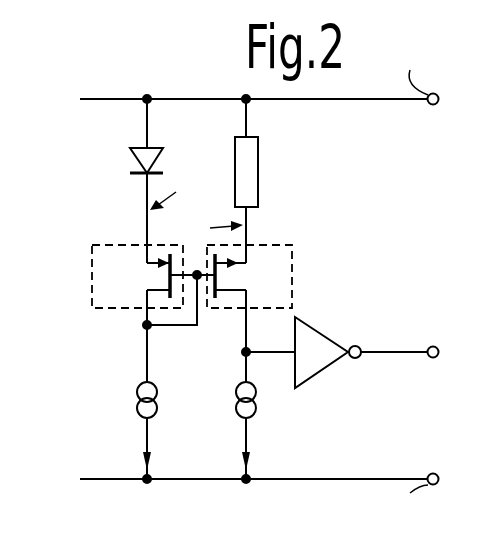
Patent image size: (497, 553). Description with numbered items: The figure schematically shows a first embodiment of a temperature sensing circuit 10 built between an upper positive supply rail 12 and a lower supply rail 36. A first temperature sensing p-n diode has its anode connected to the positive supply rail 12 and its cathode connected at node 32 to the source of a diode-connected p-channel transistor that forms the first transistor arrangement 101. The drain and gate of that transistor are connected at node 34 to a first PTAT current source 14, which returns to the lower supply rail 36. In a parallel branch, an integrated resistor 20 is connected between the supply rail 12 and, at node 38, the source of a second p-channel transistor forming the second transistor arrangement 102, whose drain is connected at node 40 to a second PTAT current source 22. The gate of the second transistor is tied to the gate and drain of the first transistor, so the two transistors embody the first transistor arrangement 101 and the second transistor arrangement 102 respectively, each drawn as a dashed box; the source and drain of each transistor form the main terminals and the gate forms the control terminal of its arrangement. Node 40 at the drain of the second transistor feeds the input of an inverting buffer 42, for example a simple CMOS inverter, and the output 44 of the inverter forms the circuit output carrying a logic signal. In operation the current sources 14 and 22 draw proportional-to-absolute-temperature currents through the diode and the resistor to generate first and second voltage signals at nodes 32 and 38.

The diode D1 10 is at (104, 164).
The positive supply rail 12 is at (383, 100).
The first PTAT current source 14 is at (137, 392).
The resistor R1 20 is at (312, 140).
The second PTAT current source 22 is at (240, 383).
The node 32 is at (147, 222).
The node 34 is at (147, 358).
The ground terminal VSS 36 is at (345, 479).
The node 38 is at (246, 230).
The node 40 is at (250, 350).
The inverting buffer 42 is at (328, 338).
The output 44 is at (380, 355).
The first transistor arrangement 101 is at (92, 268).
The second transistor arrangement 102 is at (292, 263).